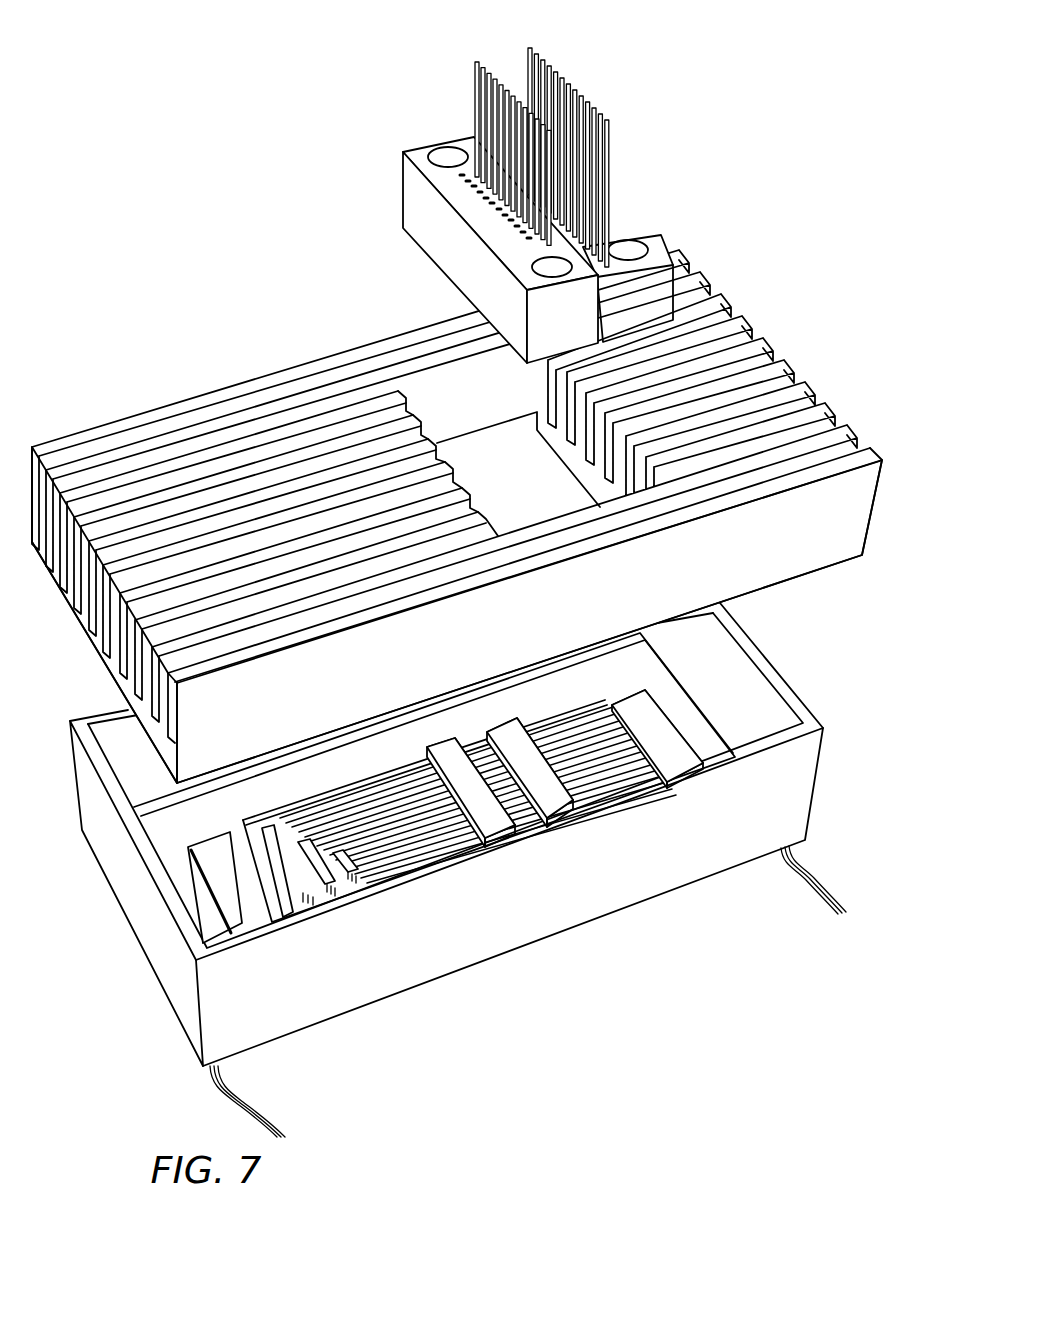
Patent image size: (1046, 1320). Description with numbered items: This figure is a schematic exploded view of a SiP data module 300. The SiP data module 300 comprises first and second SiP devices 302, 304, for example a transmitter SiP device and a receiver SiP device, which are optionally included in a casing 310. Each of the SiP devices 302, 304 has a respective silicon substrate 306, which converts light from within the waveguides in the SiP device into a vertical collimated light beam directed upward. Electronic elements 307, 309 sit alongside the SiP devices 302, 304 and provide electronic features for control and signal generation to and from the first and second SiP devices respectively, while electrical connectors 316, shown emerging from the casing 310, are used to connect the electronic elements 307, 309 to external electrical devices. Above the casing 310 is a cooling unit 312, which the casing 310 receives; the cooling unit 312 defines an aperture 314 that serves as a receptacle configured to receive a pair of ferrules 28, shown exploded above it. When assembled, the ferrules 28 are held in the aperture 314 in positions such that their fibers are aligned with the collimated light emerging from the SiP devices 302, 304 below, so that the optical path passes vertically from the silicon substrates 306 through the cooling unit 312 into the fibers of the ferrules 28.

The SiP data module 300 is at (136, 275).
The ferrules 28 is at (488, 228).
The first SiP device 302 is at (610, 787).
The second SiP device 304 is at (430, 843).
The silicon substrate 306 is at (550, 798).
The electronic element 307 is at (255, 911).
The electronic element 309 is at (680, 757).
The casing 310 is at (812, 774).
The cooling unit 312 is at (841, 552).
The aperture 314 is at (487, 475).
The electrical connectors 316 is at (547, 995).